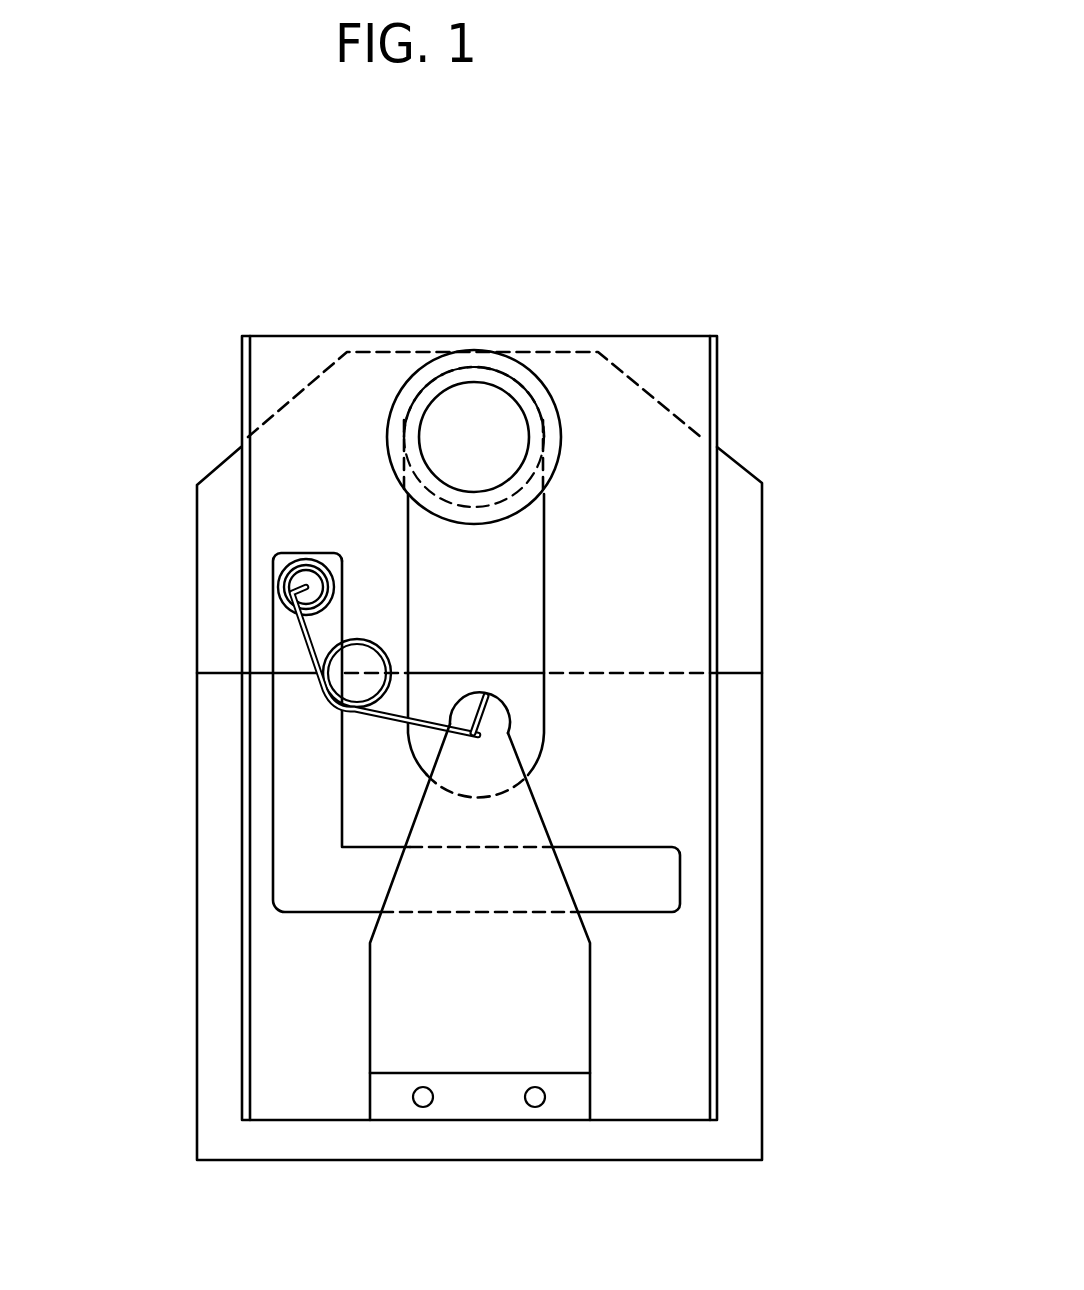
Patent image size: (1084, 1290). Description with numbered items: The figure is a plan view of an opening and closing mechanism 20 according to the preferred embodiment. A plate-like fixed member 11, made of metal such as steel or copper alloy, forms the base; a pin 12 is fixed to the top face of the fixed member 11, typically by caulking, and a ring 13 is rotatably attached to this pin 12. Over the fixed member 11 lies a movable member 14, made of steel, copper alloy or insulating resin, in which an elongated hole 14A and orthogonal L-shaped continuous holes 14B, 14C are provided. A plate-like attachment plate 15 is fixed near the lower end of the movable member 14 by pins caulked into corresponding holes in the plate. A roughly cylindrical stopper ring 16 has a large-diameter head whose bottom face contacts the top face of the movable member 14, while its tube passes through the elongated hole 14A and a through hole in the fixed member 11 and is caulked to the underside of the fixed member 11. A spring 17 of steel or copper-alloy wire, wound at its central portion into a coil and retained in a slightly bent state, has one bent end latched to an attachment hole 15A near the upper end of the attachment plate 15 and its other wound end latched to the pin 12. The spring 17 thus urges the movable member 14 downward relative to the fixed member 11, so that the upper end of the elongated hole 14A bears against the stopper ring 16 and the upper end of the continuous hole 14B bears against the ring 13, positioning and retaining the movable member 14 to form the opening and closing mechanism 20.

The fixed member 11 is at (743, 960).
The pin 12 is at (284, 593).
The ring 13 is at (277, 573).
The movable member 14 is at (675, 612).
The elongated hole 14A is at (490, 572).
The continuous hole 14B is at (305, 796).
The continuous hole 14C is at (642, 876).
The attachment plate 15 is at (415, 985).
The attachment hole 15A is at (487, 733).
The stopper ring 16 is at (557, 412).
The spring 17 is at (323, 687).
The opening and closing mechanism 20 is at (692, 317).